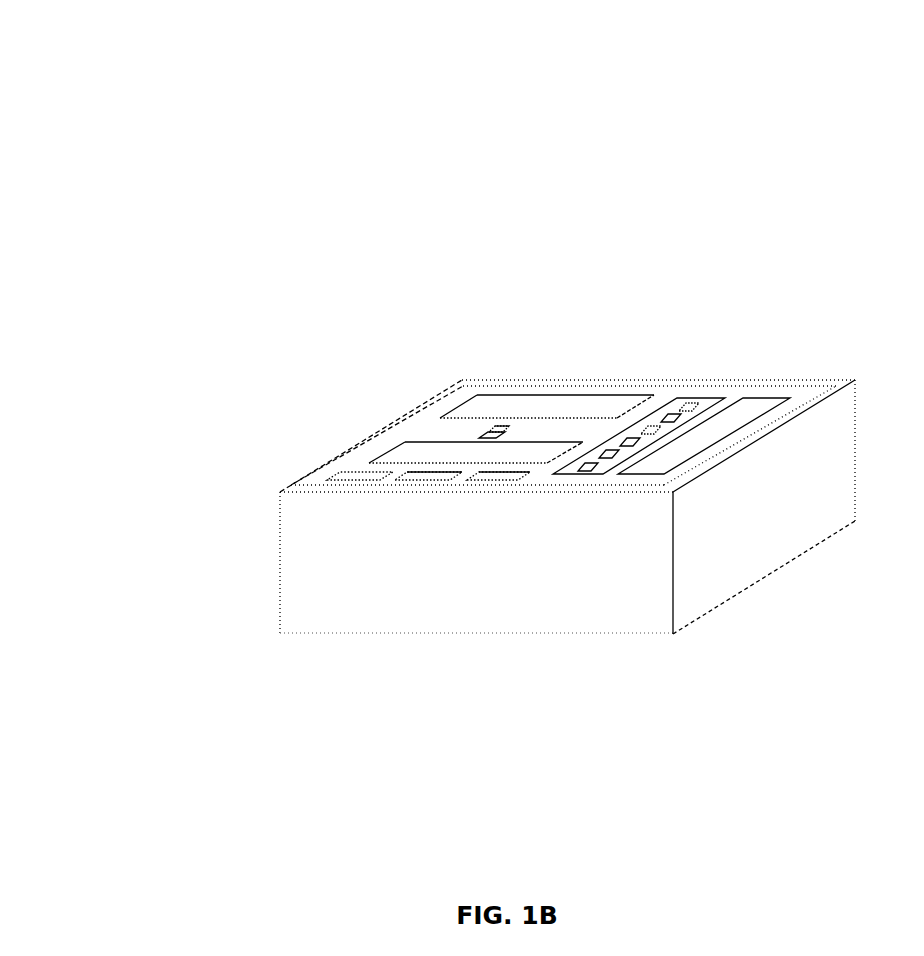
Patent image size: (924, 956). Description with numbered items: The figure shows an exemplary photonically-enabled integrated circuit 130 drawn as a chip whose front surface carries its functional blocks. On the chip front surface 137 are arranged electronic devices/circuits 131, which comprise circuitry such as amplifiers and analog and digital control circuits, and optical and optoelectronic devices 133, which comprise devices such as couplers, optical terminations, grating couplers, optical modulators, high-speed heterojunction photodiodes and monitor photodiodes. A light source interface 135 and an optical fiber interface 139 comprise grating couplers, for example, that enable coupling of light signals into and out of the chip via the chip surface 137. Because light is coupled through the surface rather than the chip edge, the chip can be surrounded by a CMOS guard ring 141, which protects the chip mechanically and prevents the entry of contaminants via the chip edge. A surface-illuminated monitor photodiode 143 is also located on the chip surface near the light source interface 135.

The photonically-enabled integrated circuit 130 is at (125, 102).
The electronic devices/circuits 131 is at (497, 480).
The optical and optoelectronic devices 133 is at (512, 414).
The light source interface 135 is at (506, 426).
The chip front surface 137 is at (603, 388).
The optical fiber interface 139 is at (699, 398).
The CMOS guard ring 141 is at (843, 383).
The surface-illuminated monitor photodiode 143 is at (485, 436).